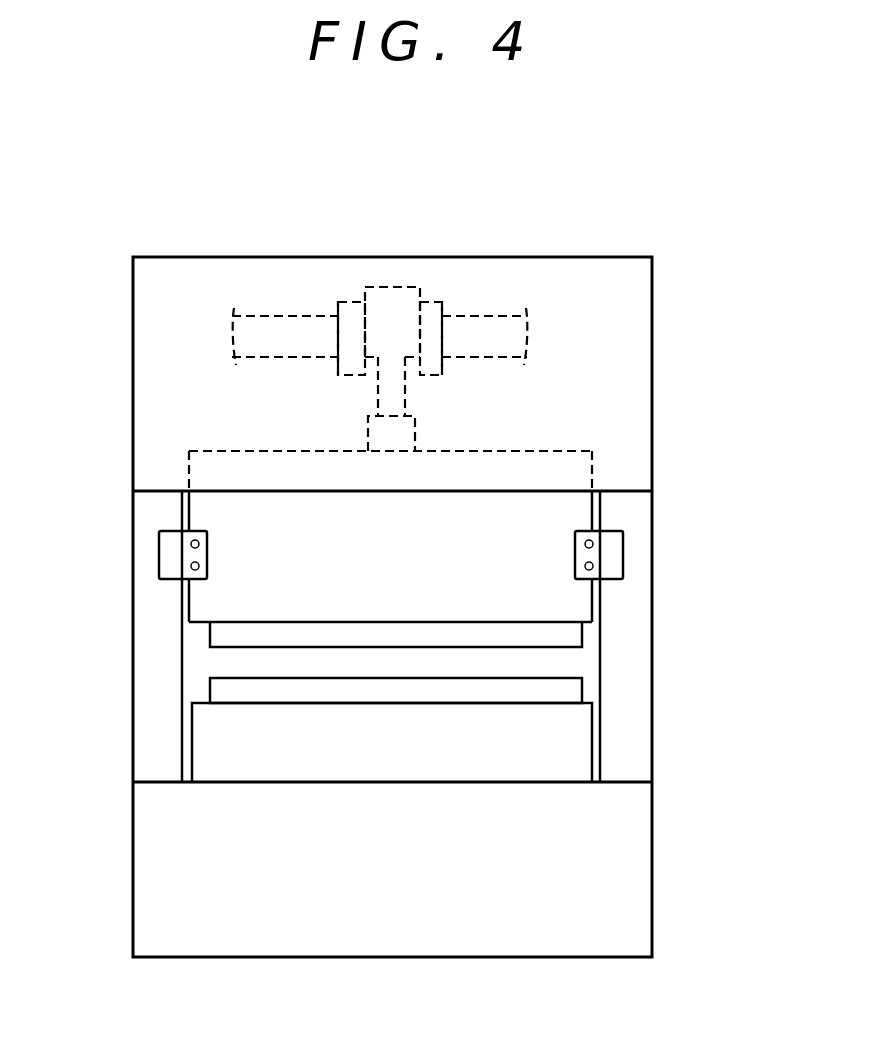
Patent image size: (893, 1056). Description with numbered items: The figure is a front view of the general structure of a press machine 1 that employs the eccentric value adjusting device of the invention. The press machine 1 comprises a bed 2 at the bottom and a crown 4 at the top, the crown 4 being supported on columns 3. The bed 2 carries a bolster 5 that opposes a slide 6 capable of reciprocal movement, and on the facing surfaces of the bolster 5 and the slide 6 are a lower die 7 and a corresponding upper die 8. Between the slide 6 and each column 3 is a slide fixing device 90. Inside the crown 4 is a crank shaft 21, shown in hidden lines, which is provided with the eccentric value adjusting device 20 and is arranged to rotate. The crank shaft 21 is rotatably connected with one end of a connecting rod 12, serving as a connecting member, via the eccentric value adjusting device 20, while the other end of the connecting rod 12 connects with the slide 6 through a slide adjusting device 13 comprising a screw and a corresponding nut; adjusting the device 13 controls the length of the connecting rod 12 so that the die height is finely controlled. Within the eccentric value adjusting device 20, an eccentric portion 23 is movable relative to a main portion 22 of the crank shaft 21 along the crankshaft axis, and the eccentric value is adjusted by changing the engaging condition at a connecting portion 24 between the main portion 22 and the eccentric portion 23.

The press machine 1 is at (622, 252).
The bed 2 is at (148, 897).
The column 3 is at (148, 688).
The crown 4 is at (640, 396).
The bolster 5 is at (582, 738).
The slide 6 is at (584, 500).
The lower die 7 is at (212, 696).
The upper die 8 is at (212, 634).
The connecting rod 12 is at (406, 384).
The slide adjusting device 13 is at (368, 438).
The eccentric value adjusting device 20 is at (404, 287).
The crank shaft 21 is at (477, 316).
The main portion 22 is at (338, 330).
The eccentric portion 23 is at (380, 287).
The connecting portion 24 is at (360, 298).
The slide fixing device 90 is at (159, 560).